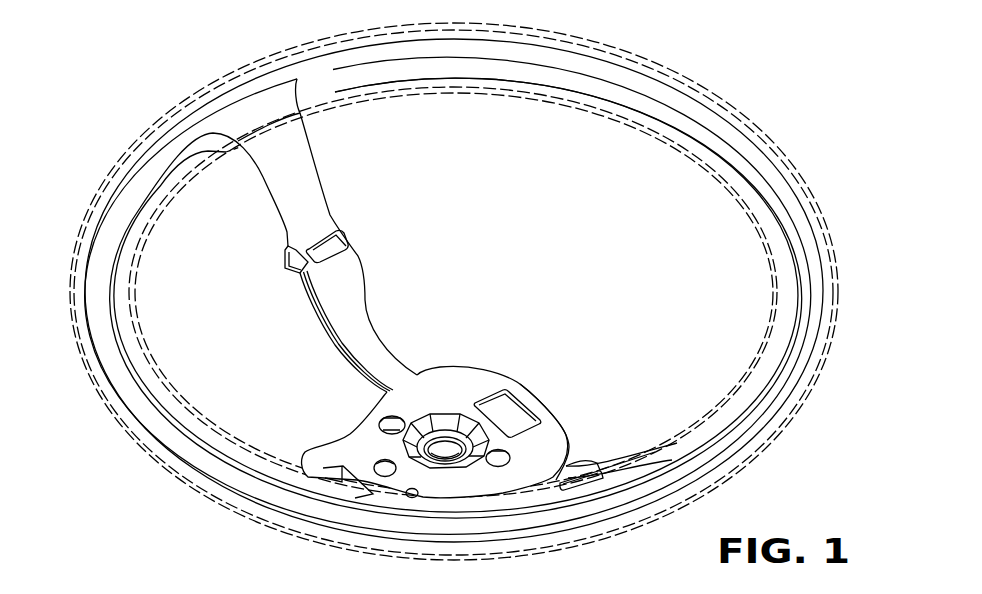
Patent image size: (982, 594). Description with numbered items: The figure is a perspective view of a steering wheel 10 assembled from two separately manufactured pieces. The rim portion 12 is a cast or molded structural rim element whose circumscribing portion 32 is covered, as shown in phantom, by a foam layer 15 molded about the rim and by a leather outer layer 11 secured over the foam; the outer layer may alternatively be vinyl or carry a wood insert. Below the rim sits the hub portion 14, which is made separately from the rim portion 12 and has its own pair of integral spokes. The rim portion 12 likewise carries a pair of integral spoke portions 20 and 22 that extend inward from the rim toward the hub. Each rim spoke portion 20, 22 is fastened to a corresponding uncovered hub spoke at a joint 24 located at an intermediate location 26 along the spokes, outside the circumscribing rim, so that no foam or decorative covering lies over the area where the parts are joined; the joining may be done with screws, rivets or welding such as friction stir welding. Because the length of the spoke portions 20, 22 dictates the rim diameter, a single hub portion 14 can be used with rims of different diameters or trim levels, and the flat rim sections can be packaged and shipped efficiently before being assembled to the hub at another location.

The steering wheel 10 is at (182, 75).
The leather outer layer 11 is at (607, 45).
The rim portion 12 is at (353, 57).
The hub portion 14 is at (463, 375).
The foam layer 15 is at (680, 80).
The spoke portion 20 is at (317, 193).
The spoke portion 22 is at (617, 477).
The joint 24 is at (343, 246).
The intermediate location 26 is at (343, 215).
The circumscribing portion 32 is at (752, 442).